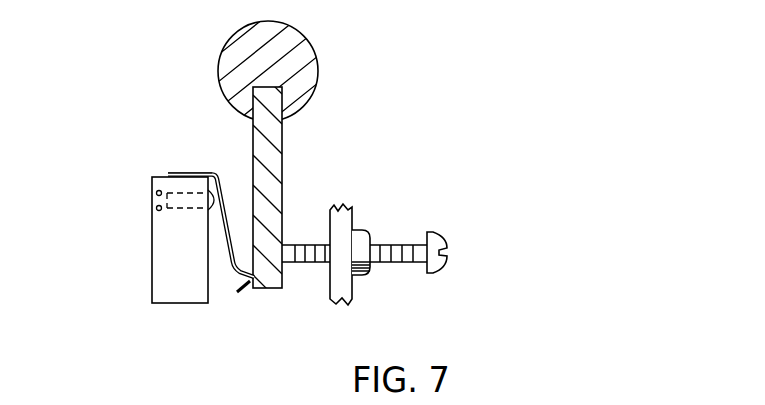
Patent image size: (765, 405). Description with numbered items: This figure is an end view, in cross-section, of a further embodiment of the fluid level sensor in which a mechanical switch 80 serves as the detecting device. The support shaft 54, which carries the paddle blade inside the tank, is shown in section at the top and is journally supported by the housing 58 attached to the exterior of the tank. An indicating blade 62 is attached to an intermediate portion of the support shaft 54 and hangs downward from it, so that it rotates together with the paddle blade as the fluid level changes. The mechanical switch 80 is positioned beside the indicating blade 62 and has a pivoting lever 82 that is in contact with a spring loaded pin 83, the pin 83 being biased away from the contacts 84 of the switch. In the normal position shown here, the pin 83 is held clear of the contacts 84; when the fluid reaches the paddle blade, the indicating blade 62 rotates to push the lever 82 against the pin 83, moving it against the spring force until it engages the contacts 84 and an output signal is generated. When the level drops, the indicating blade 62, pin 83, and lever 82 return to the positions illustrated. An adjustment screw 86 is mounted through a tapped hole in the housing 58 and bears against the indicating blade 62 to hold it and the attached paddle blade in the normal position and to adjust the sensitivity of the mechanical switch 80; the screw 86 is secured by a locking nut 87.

The support shaft 54 is at (307, 51).
The indicating blade 62 is at (273, 176).
The housing 58 is at (343, 287).
The locking nut 87 is at (367, 238).
The adjustment screw 86 is at (437, 242).
The mechanical switch 80 is at (158, 247).
The contacts 84 is at (156, 193).
The pivoting lever 82 is at (227, 250).
The spring loaded pin 83 is at (192, 192).